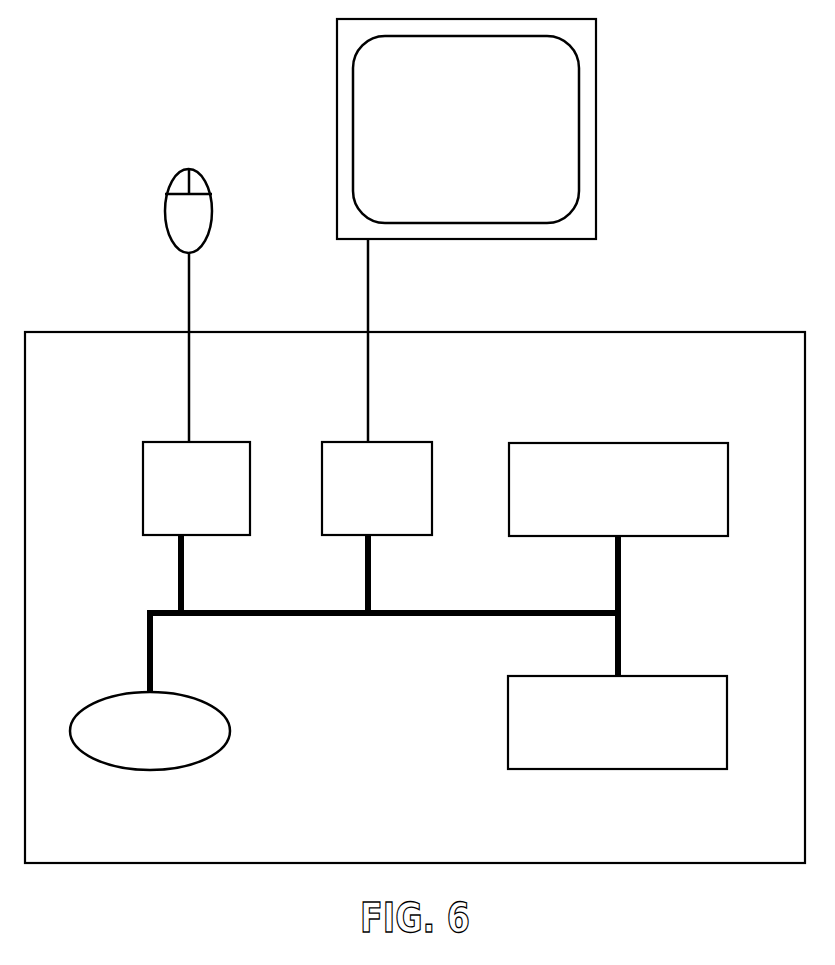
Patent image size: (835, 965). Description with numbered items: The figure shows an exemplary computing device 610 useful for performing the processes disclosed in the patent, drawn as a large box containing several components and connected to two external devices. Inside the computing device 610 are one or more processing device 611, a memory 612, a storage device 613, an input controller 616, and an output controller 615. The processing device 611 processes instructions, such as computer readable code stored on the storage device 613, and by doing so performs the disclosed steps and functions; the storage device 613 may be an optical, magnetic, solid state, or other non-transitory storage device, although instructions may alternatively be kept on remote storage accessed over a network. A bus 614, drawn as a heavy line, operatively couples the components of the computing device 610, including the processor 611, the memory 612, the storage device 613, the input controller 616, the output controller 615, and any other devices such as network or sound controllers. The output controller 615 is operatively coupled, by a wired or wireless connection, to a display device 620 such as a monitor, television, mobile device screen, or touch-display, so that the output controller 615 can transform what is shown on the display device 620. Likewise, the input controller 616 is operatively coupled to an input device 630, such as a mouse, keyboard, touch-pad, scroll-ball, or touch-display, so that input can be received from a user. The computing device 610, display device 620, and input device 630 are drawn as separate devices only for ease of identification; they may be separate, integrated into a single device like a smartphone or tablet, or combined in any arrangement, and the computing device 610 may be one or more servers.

The computing device 610 is at (637, 331).
The processing device 611 is at (653, 441).
The memory 612 is at (680, 676).
The storage device 613 is at (230, 733).
The bus 614 is at (417, 613).
The output controller 615 is at (401, 441).
The input controller 616 is at (212, 441).
The display device 620 is at (597, 172).
The input device 630 is at (205, 170).